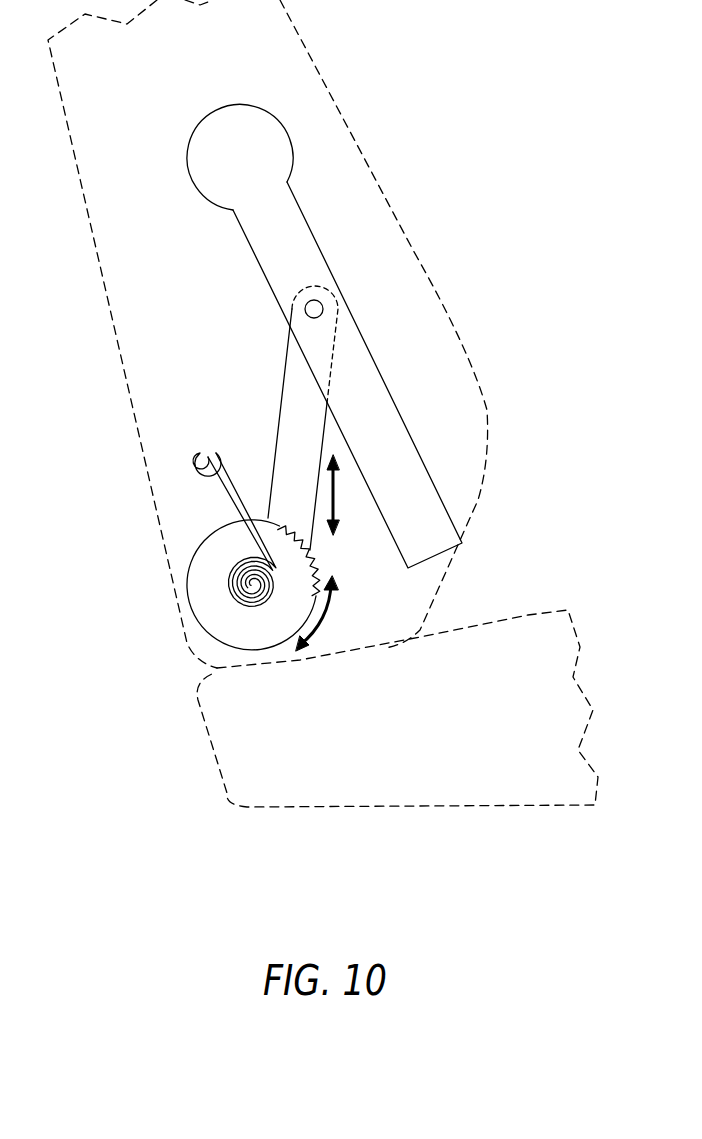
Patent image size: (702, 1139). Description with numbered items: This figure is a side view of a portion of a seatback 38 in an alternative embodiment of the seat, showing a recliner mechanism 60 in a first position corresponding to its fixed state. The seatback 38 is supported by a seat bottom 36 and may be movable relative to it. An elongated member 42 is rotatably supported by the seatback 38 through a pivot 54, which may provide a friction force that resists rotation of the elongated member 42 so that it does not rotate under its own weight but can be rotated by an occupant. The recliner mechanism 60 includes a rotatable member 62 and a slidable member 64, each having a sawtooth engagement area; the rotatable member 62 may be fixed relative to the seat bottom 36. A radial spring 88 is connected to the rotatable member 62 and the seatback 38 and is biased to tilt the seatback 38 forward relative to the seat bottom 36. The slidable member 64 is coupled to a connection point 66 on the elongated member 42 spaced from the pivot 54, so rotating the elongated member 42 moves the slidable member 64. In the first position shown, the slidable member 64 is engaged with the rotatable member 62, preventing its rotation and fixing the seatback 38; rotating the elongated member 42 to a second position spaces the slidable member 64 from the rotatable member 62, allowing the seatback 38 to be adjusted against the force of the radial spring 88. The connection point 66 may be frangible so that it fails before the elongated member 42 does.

The seat bottom 36 is at (528, 615).
The seatback 38 is at (327, 90).
The elongated member 42 is at (313, 232).
The pivot 54 is at (197, 125).
The recliner mechanism 60 is at (323, 562).
The rotatable member 62 is at (253, 650).
The slidable member 64 is at (278, 432).
The connection point 66 is at (323, 310).
The radial spring 88 is at (230, 595).